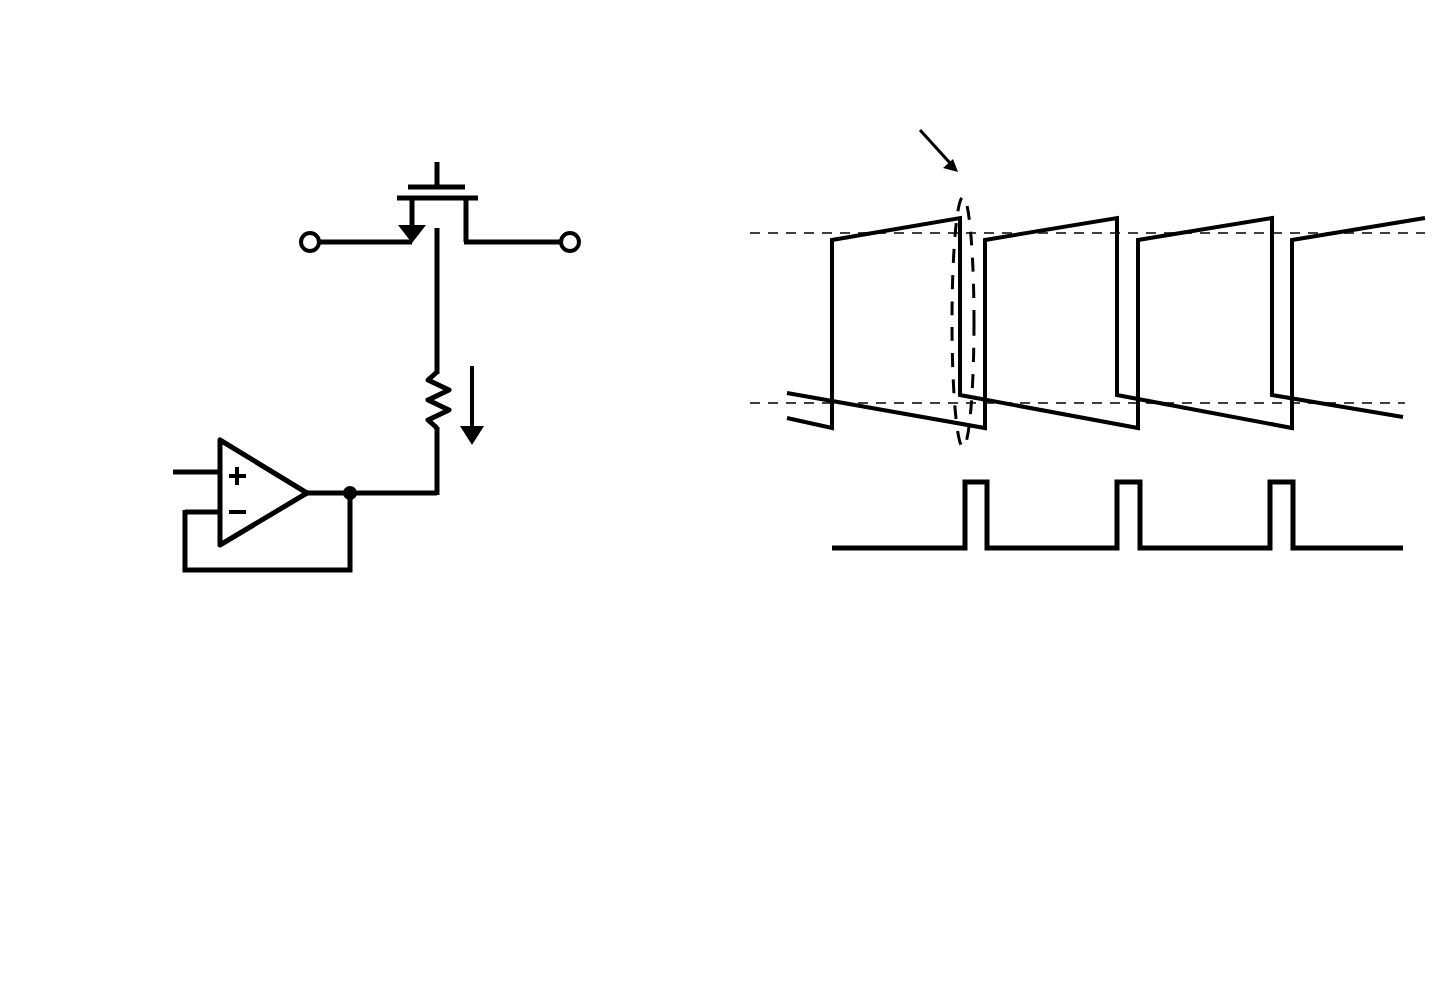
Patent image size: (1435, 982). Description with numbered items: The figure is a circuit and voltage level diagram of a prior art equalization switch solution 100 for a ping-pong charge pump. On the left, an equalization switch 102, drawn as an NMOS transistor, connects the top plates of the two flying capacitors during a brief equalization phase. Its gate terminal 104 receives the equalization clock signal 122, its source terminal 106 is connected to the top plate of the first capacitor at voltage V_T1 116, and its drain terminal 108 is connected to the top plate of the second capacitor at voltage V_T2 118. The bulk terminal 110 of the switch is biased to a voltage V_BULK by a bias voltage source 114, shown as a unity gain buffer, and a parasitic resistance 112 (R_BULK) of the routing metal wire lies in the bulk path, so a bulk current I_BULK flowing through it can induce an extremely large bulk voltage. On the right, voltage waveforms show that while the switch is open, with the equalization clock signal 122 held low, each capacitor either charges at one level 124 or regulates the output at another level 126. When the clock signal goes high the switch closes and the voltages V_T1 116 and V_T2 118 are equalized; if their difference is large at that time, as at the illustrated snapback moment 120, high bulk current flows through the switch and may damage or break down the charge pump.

The equalization switch solution 100 is at (580, 762).
The equalization switch 102 is at (468, 196).
The gate terminal 104 is at (428, 188).
The source terminal 106 is at (304, 231).
The drain terminal 108 is at (571, 233).
The bulk terminal 110 is at (433, 252).
The parasitic resistance 112 is at (425, 378).
The bias voltage source 114 is at (241, 445).
The voltage V_T1 116 is at (248, 229).
The voltage V_T2 118 is at (607, 225).
The snapback moment 120 is at (790, 90).
The equalization clock signal 122 is at (443, 128).
The charging level 124 is at (1068, 236).
The regulating level 126 is at (1058, 406).